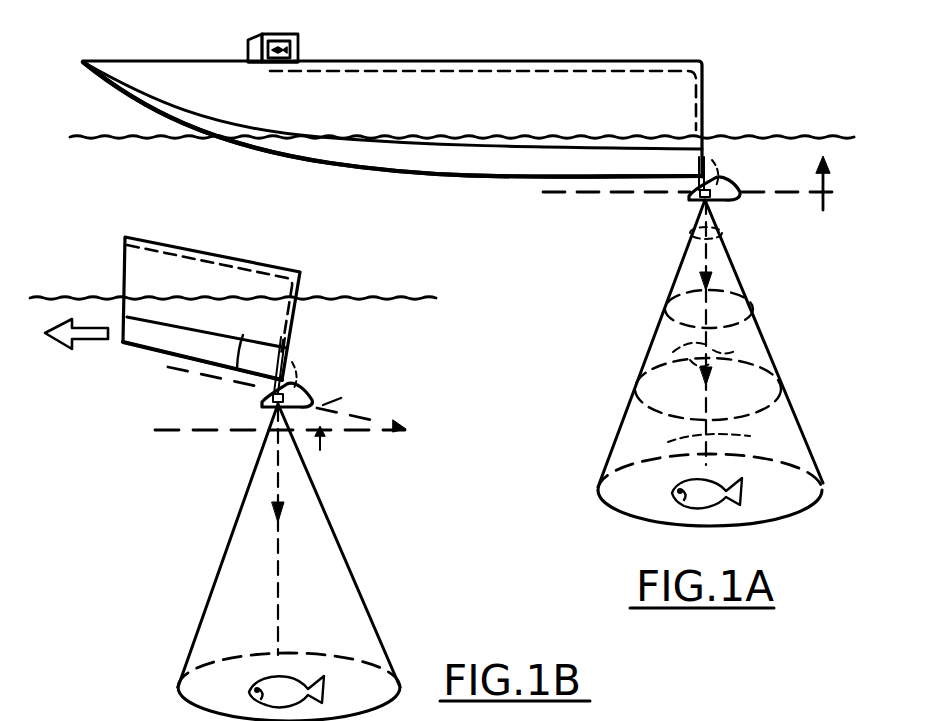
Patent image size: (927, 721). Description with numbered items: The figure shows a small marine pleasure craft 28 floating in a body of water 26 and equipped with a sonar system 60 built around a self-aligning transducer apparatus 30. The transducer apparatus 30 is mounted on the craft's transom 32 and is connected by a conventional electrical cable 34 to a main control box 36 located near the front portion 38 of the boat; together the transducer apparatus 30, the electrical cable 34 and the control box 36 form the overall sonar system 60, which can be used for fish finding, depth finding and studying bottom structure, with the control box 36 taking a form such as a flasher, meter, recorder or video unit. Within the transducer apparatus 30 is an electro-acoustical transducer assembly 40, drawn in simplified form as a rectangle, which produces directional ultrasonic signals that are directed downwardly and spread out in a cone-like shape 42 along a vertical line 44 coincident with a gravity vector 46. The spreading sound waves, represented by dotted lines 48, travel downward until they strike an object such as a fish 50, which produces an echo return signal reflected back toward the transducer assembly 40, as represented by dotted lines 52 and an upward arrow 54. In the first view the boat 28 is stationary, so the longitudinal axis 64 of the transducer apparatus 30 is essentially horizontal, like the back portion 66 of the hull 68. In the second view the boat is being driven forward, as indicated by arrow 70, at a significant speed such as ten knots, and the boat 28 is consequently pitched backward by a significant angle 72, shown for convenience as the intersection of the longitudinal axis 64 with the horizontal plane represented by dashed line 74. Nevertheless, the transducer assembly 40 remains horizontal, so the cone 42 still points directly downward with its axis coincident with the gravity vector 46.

In FIG. 1A, the body of water 26 is at (125, 151).
In FIG. 1B, the body of water 26 is at (367, 309).
In FIG. 1A, the pleasure craft 28 is at (466, 119).
In FIG. 1B, the pleasure craft 28 is at (125, 258).
In FIG. 1A, the self-aligning transducer apparatus 30 is at (738, 173).
In FIG. 1B, the self-aligning transducer apparatus 30 is at (310, 380).
In FIG. 1A, the transom 32 is at (702, 121).
In FIG. 1A, the electrical cable 34 is at (582, 70).
In FIG. 1B, the electrical cable 34 is at (216, 256).
In FIG. 1A, the main control box 36 is at (300, 50).
In FIG. 1A, the front portion 38 is at (260, 64).
In FIG. 1A, the electro-acoustical transducer assembly 40 is at (693, 196).
In FIG. 1B, the electro-acoustical transducer assembly 40 is at (270, 395).
In FIG. 1A, the cone-like shape 42 is at (751, 320).
In FIG. 1B, the cone-like shape 42 is at (360, 586).
In FIG. 1A, the vertical line 44 is at (712, 258).
In FIG. 1A, the gravity vector 46 is at (714, 362).
In FIG. 1B, the gravity vector 46 is at (278, 490).
In FIG. 1A, the dotted lines representing spreading sound waves 48 is at (690, 247).
In FIG. 1A, the fish 50 is at (730, 494).
In FIG. 1A, the dotted lines representing echo return 52 is at (658, 323).
In FIG. 1A, the upward arrow 54 is at (682, 382).
In FIG. 1A, the sonar system 60 is at (240, 33).
In FIG. 1A, the longitudinal axis 64 is at (575, 191).
In FIG. 1B, the longitudinal axis 64 is at (205, 378).
In FIG. 1A, the back portion 66 is at (648, 176).
In FIG. 1B, the back portion 66 is at (245, 340).
In FIG. 1A, the hull 68 is at (402, 174).
In FIG. 1B, the arrow 70 is at (92, 346).
In FIG. 1B, the angle 72 is at (328, 402).
In FIG. 1B, the dashed line 74 is at (193, 430).